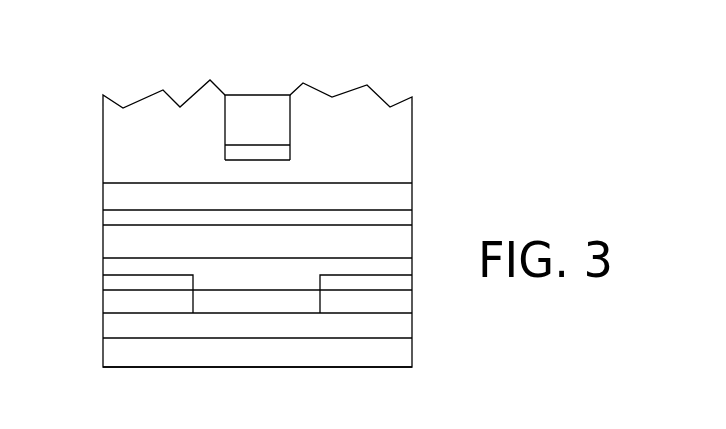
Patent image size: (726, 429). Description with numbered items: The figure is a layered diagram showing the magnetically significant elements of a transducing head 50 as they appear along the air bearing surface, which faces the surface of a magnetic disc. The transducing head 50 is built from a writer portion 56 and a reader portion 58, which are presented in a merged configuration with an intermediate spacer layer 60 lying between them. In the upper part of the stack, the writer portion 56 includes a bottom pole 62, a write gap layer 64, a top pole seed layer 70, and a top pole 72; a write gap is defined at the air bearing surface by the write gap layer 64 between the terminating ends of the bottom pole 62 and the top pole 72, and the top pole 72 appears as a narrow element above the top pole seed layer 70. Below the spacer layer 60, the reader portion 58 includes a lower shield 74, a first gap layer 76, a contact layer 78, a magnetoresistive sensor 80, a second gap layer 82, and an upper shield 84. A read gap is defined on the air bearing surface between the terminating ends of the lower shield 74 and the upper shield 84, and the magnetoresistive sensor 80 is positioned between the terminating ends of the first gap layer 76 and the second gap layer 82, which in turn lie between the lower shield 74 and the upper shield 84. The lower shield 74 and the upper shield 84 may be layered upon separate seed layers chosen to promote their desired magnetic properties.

The transducing head 50 is at (463, 310).
The writer portion 56 is at (97, 95).
The reader portion 58 is at (97, 225).
The spacer layer 60 is at (398, 218).
The bottom pole 62 is at (398, 200).
The write gap layer 64 is at (288, 172).
The top pole seed layer 70 is at (292, 157).
The top pole 72 is at (263, 94).
The lower shield 74 is at (385, 355).
The first gap layer 76 is at (350, 330).
The contact layer 78 is at (175, 282).
The magnetoresistive (MR) sensor 80 is at (252, 300).
The second gap layer 82 is at (210, 272).
The upper shield 84 is at (142, 245).